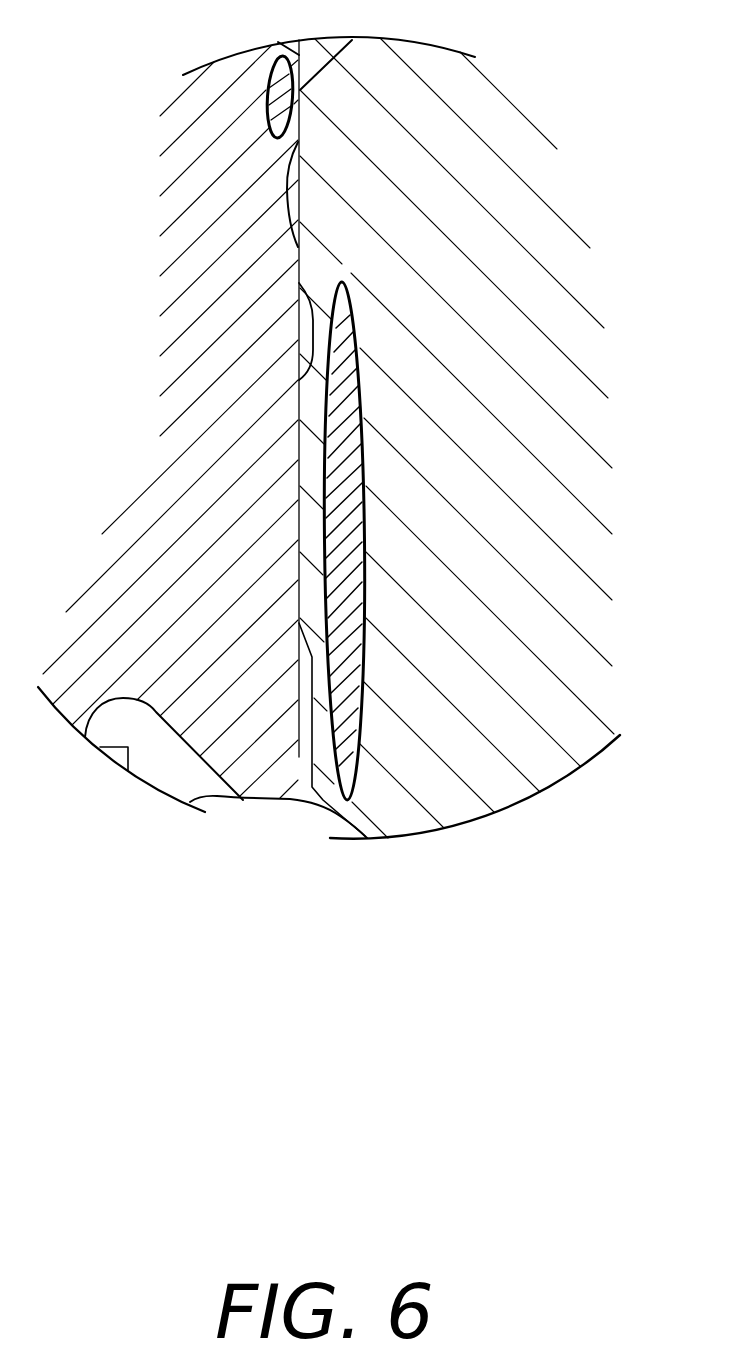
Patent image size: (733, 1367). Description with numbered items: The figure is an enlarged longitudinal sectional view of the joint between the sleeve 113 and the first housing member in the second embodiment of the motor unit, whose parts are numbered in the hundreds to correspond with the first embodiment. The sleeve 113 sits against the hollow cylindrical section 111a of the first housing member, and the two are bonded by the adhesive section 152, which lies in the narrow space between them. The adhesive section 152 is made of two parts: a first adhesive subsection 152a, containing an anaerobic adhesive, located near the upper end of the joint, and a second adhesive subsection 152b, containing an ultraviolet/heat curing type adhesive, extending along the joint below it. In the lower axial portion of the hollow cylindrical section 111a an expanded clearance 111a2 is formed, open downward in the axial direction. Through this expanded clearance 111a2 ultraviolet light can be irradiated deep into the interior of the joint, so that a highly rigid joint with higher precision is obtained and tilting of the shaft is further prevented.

The sleeve 113 is at (125, 484).
The hollow cylindrical section 111a is at (520, 452).
The expanded clearance 111a2 is at (306, 743).
The adhesive section 152 is at (402, 427).
The first adhesive subsection 152a is at (292, 98).
The second adhesive subsection 152b is at (392, 509).